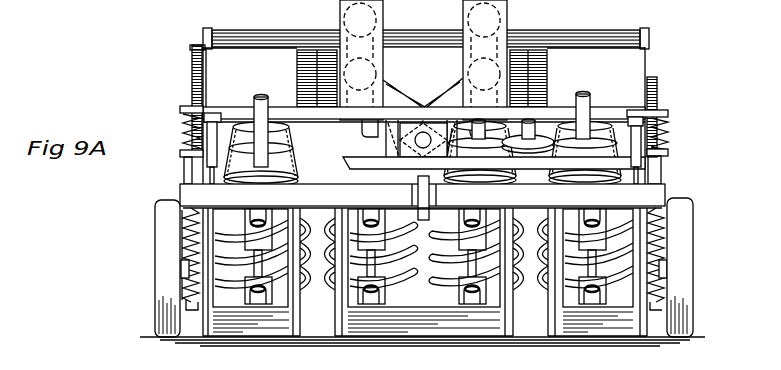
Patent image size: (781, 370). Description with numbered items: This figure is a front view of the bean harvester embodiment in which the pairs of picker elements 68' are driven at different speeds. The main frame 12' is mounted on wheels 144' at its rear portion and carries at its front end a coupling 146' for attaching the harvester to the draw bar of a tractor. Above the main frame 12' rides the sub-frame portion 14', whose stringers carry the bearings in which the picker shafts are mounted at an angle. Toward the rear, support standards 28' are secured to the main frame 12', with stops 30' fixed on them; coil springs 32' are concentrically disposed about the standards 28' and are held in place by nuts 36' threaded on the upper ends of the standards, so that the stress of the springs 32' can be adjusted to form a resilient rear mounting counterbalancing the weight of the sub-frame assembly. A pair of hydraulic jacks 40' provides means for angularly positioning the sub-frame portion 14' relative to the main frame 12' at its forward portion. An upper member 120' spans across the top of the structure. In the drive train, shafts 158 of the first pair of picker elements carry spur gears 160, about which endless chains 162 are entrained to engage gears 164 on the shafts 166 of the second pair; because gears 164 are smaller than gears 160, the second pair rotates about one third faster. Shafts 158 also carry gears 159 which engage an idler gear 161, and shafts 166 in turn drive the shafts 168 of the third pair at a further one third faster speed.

The shafts 168 is at (8, 10).
The shafts 166 is at (150, 10).
The top rail 120' is at (442, 24).
The coil springs 32' is at (173, 145).
The gears 164 is at (283, 127).
The endless chains 162 is at (278, 144).
The spur gears 160 is at (281, 166).
The gears 159 is at (562, 135).
The sub-frame portion 14' is at (424, 91).
The nuts 36' is at (671, 121).
The hydraulic jacks 40' is at (705, 134).
The stops 30' is at (684, 153).
The support standards 28' is at (684, 170).
The main frame 12' is at (389, 190).
The picker elements 68' is at (154, 259).
The wheels 144' is at (416, 267).
The shafts 158 is at (372, 213).
The coupling 146' is at (454, 198).
The idler gear 161 is at (541, 146).